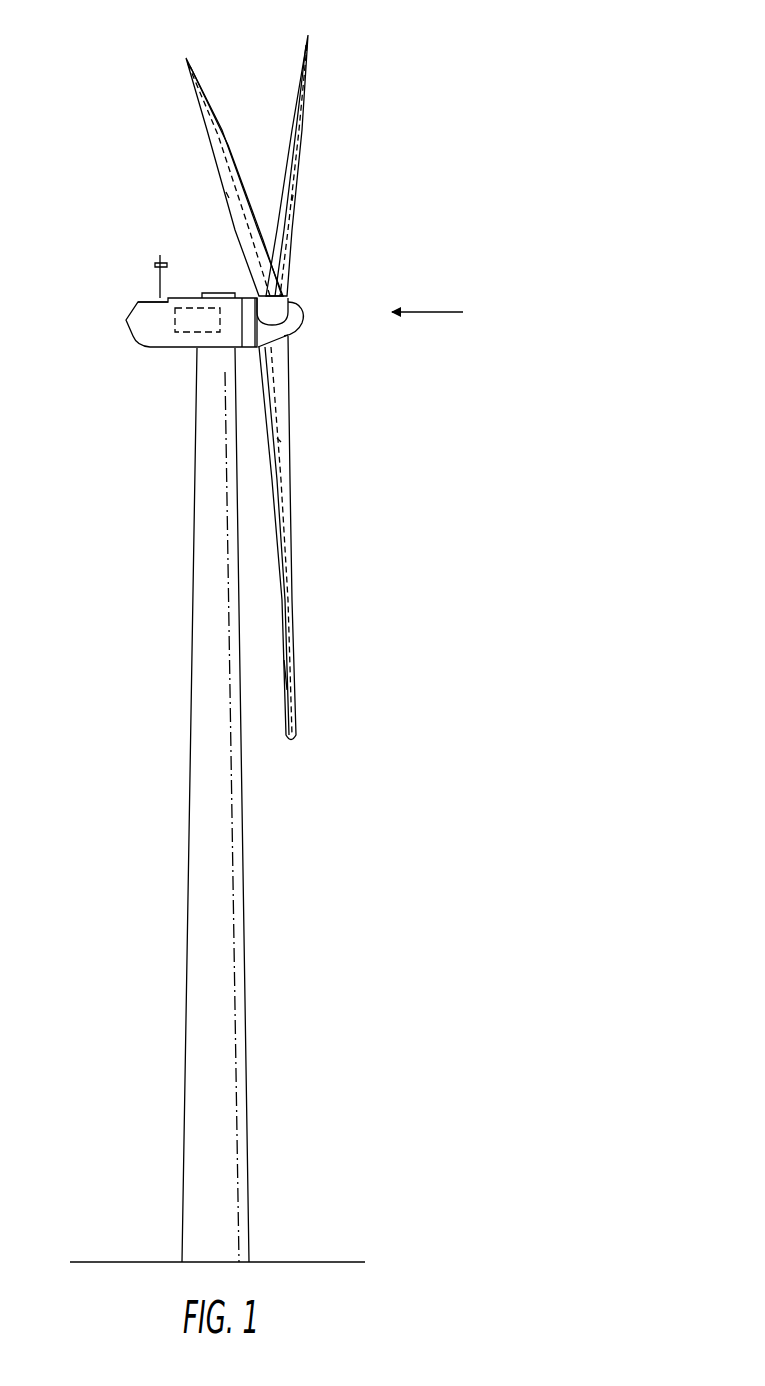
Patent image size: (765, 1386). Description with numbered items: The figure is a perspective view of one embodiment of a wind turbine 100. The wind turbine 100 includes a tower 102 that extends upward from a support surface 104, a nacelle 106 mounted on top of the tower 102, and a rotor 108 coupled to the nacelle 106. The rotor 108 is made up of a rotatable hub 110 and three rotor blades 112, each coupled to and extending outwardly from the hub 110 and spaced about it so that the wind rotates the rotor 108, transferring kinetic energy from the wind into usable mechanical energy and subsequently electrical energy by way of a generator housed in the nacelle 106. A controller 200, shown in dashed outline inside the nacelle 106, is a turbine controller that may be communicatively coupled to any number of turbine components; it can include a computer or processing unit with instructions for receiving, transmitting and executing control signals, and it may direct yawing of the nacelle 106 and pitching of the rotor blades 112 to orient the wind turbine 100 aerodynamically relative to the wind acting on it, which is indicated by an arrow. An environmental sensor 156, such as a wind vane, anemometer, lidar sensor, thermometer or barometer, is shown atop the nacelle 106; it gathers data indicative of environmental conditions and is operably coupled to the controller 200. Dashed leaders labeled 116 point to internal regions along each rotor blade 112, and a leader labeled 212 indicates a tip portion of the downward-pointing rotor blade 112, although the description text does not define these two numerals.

The wind turbine 100 is at (444, 146).
The tower 102 is at (228, 842).
The support surface 104 is at (138, 1262).
The nacelle 106 is at (167, 347).
The rotor 108 is at (337, 260).
The rotatable hub 110 is at (300, 312).
The rotor blade 112 is at (292, 148).
The blade root 116 is at (226, 193).
The environmental sensor 156 is at (157, 283).
The controller 200 is at (183, 300).
The blade tip 212 is at (292, 678).